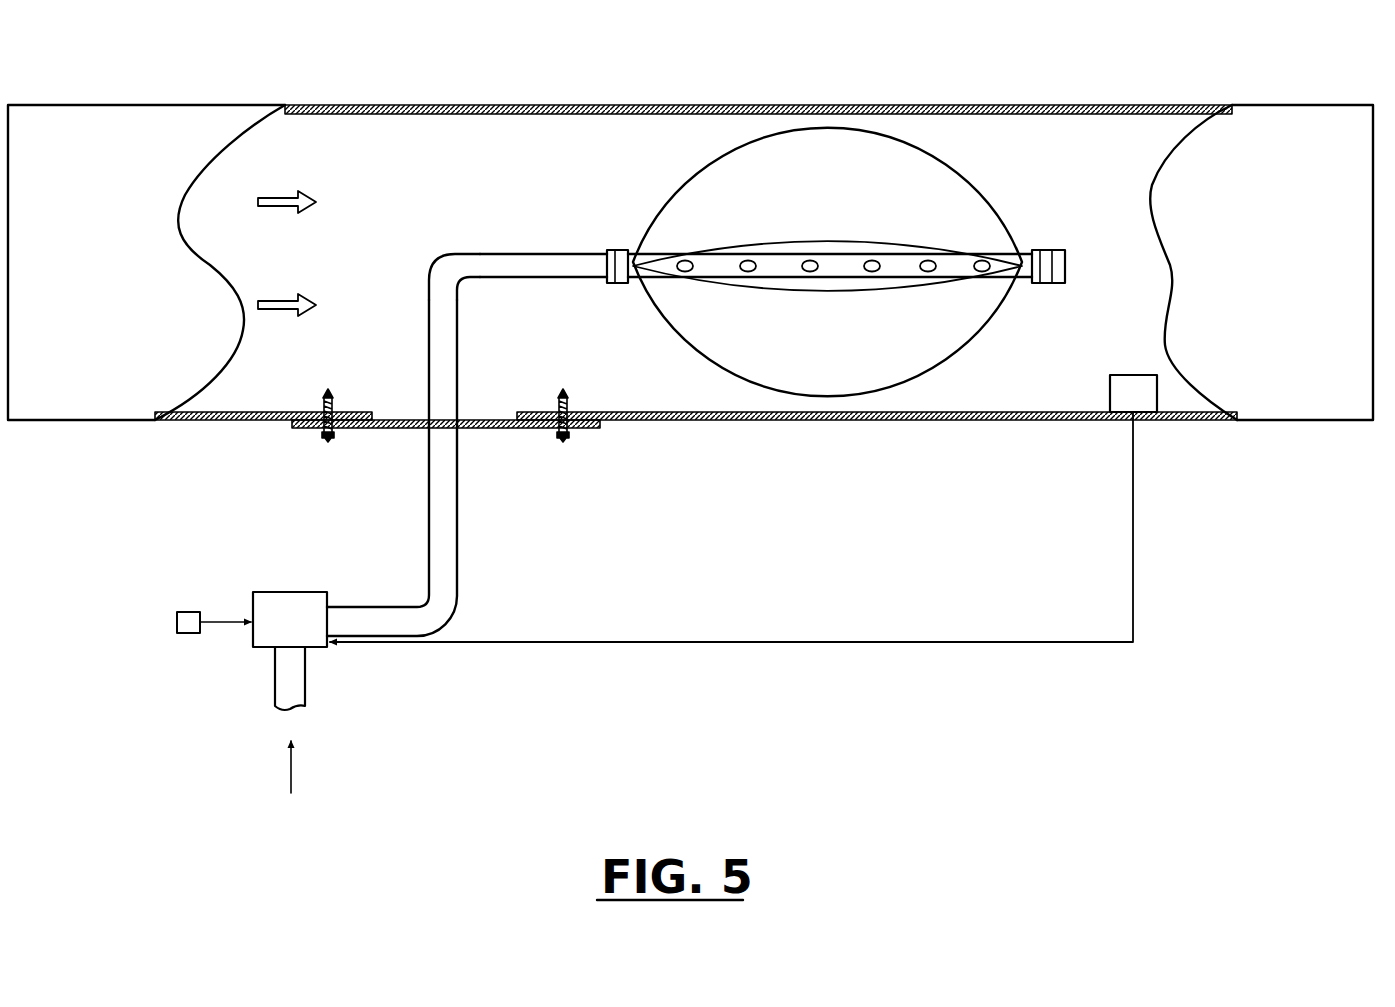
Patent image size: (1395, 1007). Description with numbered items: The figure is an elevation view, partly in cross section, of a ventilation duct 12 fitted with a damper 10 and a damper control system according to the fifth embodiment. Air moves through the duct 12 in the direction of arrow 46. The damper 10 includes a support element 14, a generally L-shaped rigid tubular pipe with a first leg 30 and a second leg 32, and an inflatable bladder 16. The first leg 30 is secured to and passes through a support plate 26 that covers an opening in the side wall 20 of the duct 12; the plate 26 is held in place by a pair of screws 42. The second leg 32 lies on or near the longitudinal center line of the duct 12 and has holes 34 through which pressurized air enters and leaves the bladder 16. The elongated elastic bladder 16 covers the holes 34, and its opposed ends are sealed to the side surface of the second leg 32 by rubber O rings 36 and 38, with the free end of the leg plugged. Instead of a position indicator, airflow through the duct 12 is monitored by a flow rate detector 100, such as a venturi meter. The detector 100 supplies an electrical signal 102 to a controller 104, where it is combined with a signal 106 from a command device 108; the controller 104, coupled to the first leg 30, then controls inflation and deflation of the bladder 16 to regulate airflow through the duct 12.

The damper 10 is at (590, 126).
The ventilation duct 12 is at (934, 99).
The support element 14 is at (444, 272).
The inflatable bladder 16 is at (797, 127).
The side wall 20 is at (168, 420).
The support plate 26 is at (388, 430).
The first leg 30 is at (458, 345).
The second leg 32 is at (553, 252).
The holes 34 is at (988, 273).
The rubber O ring 36 is at (613, 284).
The rubber O ring 38 is at (1045, 251).
The screws 42 is at (328, 434).
The arrow 46 is at (283, 200).
The flow rate detector 100 is at (1110, 392).
The electrical signal 102 is at (800, 640).
The controller 104 is at (304, 637).
The signal 106 is at (220, 615).
The command device 108 is at (192, 636).